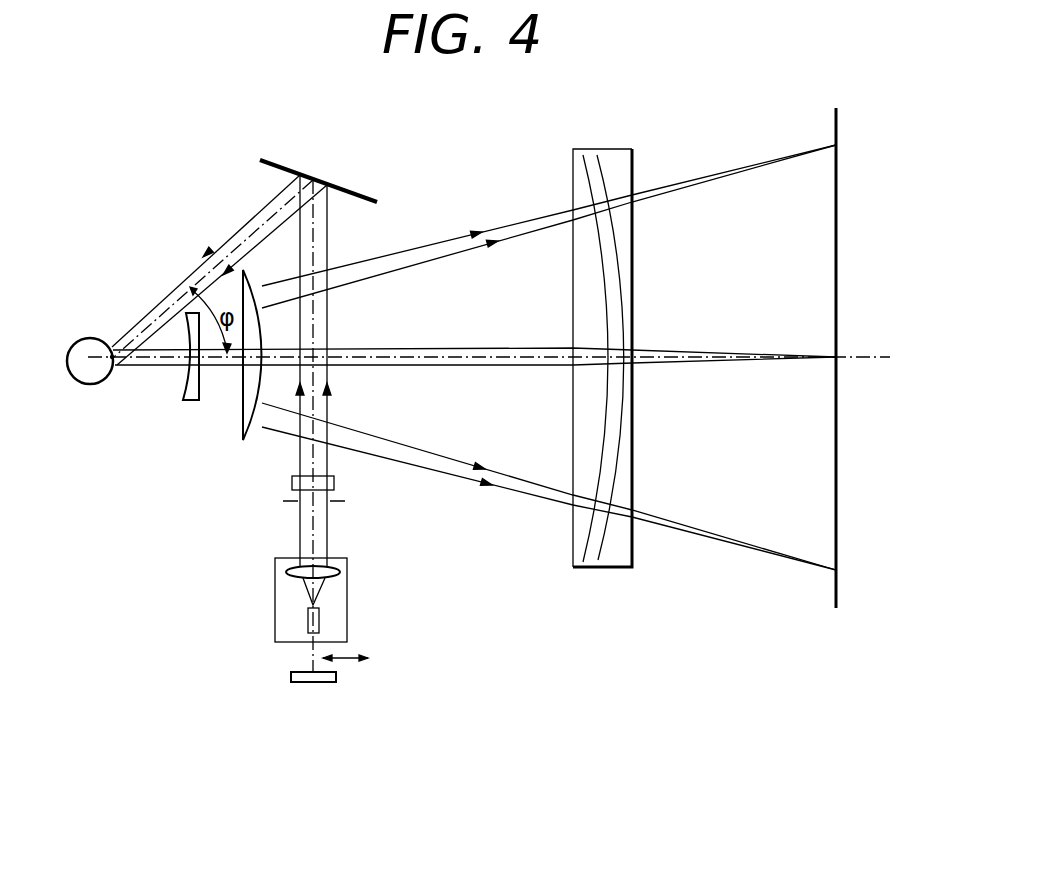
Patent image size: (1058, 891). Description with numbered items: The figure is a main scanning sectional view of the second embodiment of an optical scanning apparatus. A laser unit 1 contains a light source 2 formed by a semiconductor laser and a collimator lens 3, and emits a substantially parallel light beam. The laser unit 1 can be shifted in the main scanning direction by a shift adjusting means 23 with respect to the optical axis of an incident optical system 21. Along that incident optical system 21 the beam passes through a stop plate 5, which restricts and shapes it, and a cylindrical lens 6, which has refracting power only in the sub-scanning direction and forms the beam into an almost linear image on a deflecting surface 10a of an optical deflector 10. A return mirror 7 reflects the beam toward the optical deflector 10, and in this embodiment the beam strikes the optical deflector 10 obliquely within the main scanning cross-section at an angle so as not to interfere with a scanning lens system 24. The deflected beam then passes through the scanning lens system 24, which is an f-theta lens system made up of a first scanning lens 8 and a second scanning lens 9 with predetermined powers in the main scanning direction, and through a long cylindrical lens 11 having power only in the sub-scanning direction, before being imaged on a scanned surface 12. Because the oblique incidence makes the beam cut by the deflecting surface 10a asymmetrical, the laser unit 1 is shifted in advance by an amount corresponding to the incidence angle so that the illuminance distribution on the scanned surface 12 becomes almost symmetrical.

The laser unit 1 is at (347, 637).
The light source 2 is at (320, 614).
The collimator lens 3 is at (341, 572).
The stop plate 5 is at (342, 503).
The cylindrical lens 6 is at (335, 482).
The return mirror 7 is at (367, 196).
The first scanning lens 8 is at (190, 402).
The second scanning lens 9 is at (242, 442).
The optical deflector 10 is at (84, 376).
The deflecting surface 10a is at (112, 343).
The long cylindrical lens 11 is at (583, 567).
The scanned surface 12 is at (836, 590).
The incident optical system 21 is at (121, 470).
The shift adjusting means 23 is at (336, 676).
The scanning lens system 24 is at (168, 453).